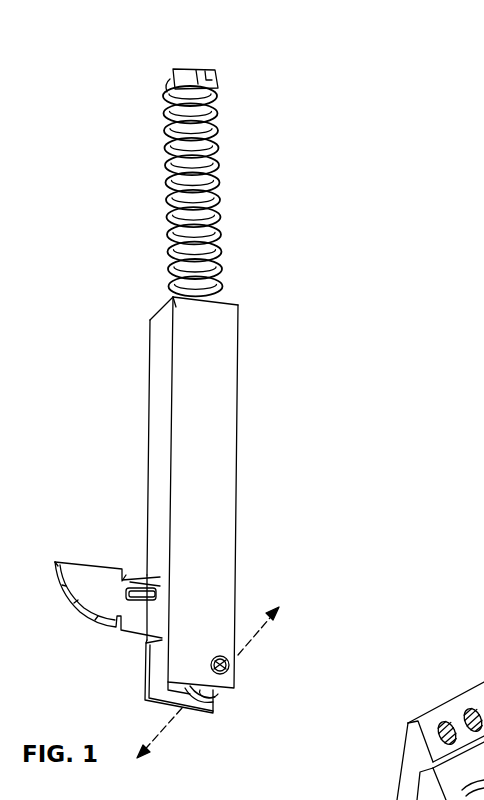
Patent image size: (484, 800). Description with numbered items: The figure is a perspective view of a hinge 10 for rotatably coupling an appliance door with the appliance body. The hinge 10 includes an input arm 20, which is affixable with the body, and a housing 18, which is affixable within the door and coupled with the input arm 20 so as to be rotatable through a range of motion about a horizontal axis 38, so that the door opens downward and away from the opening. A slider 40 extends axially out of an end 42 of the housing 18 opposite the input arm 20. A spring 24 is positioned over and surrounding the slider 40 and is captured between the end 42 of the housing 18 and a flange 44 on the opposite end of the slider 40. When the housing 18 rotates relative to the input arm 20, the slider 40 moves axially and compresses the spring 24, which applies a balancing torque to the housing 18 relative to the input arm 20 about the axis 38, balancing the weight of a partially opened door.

The hinge 10 is at (356, 146).
The housing 18 is at (223, 487).
The input arm 20 is at (85, 572).
The spring 24 is at (217, 178).
The horizontal axis 38 is at (231, 653).
The slider 40 is at (216, 210).
The end of housing 42 is at (236, 302).
The flange 44 is at (216, 78).